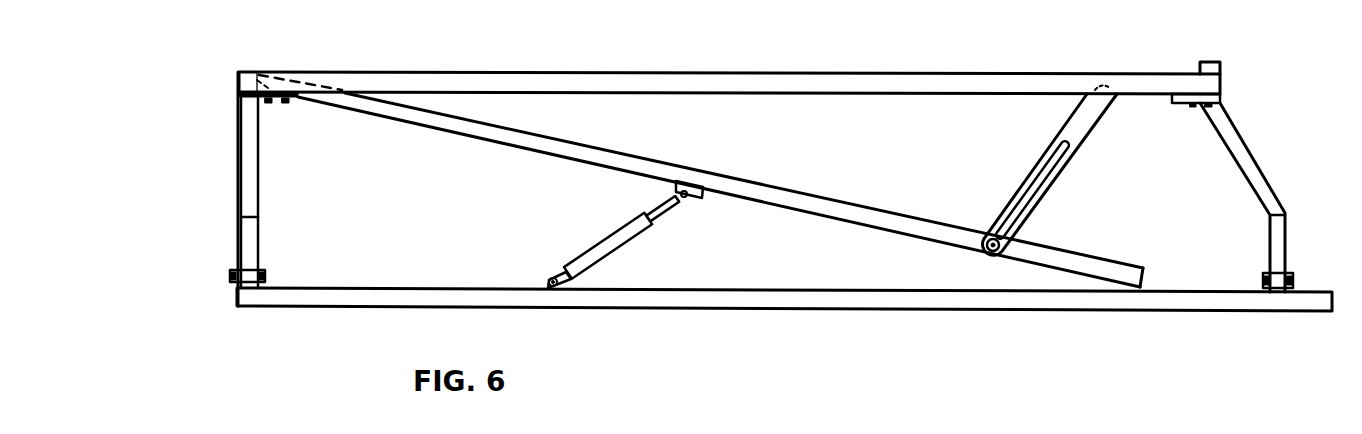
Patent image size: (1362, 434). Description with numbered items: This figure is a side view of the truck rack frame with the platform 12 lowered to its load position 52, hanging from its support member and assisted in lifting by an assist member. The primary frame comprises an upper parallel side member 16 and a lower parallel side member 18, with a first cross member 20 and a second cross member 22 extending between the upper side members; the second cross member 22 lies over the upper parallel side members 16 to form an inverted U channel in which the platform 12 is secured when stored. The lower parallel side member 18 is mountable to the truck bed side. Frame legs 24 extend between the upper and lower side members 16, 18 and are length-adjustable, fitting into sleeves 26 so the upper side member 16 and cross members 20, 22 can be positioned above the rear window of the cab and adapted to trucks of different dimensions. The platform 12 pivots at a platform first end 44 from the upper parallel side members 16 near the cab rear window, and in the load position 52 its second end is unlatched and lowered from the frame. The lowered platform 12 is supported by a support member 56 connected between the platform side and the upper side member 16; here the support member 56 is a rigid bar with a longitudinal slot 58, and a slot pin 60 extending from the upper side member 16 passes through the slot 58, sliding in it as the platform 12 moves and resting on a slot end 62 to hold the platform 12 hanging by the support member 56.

The platform 12 is at (540, 147).
The upper parallel side member 16 is at (568, 73).
The lower parallel side member 18 is at (695, 307).
The first cross member 20 is at (247, 75).
The second cross member 22 is at (1222, 60).
The frame leg 24 is at (258, 150).
The sleeve 26 is at (230, 277).
The platform first end 44 is at (282, 308).
The load position 52 is at (805, 203).
The support member 56 is at (1065, 163).
The longitudinal slot 58 is at (1040, 167).
The slot pin 60 is at (1007, 252).
The slot end 62 is at (987, 247).